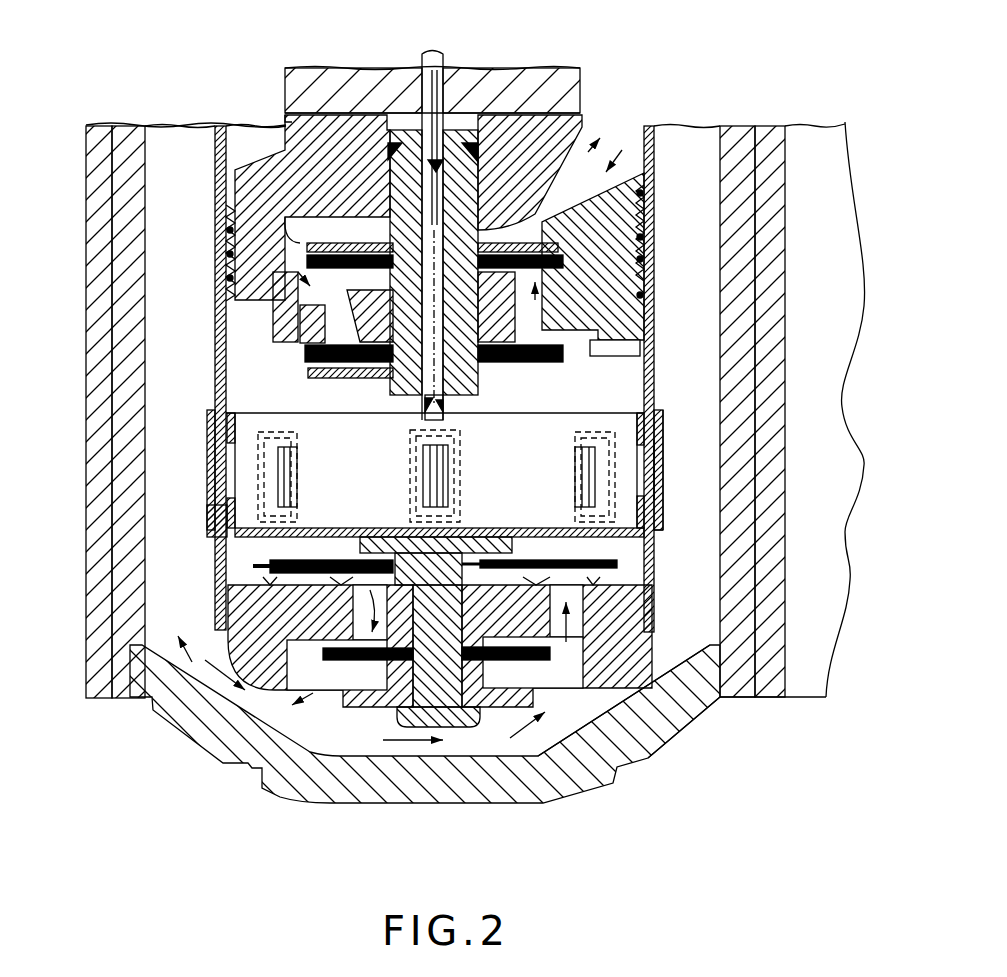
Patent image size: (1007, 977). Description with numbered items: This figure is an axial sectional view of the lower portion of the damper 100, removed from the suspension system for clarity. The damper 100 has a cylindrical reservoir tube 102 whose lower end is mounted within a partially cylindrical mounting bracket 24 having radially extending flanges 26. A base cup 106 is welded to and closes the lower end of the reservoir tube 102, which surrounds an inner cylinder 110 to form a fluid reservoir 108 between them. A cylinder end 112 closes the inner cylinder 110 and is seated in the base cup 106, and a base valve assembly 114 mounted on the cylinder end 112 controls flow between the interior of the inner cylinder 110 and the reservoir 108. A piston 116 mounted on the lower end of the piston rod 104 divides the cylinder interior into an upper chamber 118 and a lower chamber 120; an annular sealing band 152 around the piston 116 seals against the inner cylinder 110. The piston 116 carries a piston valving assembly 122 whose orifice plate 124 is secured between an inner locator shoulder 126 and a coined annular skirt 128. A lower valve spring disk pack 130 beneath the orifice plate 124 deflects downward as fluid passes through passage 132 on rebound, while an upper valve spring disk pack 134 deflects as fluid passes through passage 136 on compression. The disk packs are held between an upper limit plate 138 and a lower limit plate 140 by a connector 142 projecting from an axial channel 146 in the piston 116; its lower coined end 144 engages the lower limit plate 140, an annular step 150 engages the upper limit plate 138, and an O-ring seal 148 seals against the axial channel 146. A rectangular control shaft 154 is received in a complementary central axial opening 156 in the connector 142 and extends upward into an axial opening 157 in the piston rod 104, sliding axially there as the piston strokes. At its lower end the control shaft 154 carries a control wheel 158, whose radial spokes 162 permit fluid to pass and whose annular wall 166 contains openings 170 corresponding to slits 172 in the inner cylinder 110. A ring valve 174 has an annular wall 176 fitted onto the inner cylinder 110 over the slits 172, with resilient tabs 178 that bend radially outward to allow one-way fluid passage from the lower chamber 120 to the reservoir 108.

The mounting bracket 24 is at (93, 188).
The flanges 26 is at (803, 153).
The damper 100 is at (163, 118).
The reservoir tube 102 is at (128, 125).
The piston rod 104 is at (573, 66).
The base cup 106 is at (205, 720).
The fluid reservoir 108 is at (177, 167).
The inner cylinder 110 is at (648, 123).
The cylinder end 112 is at (630, 653).
The base valve assembly 114 is at (377, 717).
The piston 116 is at (605, 340).
The upper chamber 118 is at (248, 143).
The lower chamber 120 is at (610, 397).
The piston valving assembly 122 is at (268, 338).
The orifice plate 124 is at (635, 265).
The inner locator shoulder 126 is at (217, 278).
The annular skirt 128 is at (585, 352).
The lower valve spring disk pack 130 is at (563, 357).
The passage 132 is at (275, 318).
The upper valve spring disk pack 134 is at (632, 227).
The passage 136 is at (635, 300).
The upper limit plate 138 is at (603, 200).
The lower limit plate 140 is at (362, 377).
The connector 142 is at (453, 380).
The lower coined end 144 is at (410, 380).
The axial channel 146 is at (355, 140).
The O-ring seal 148 is at (560, 215).
The annular step 150 is at (360, 243).
The annular sealing band 152 is at (217, 247).
The control shaft 154 is at (428, 102).
The central axial opening 156 is at (493, 200).
The axial opening 157 is at (423, 70).
The control wheel 158 is at (600, 537).
The radial spokes 162 is at (472, 527).
The annular wall 166 is at (250, 430).
The openings 170 is at (667, 490).
The slits 172 is at (660, 460).
The ring valve 174 is at (667, 513).
The annular wall 176 is at (212, 520).
The resilient tabs 178 is at (208, 460).